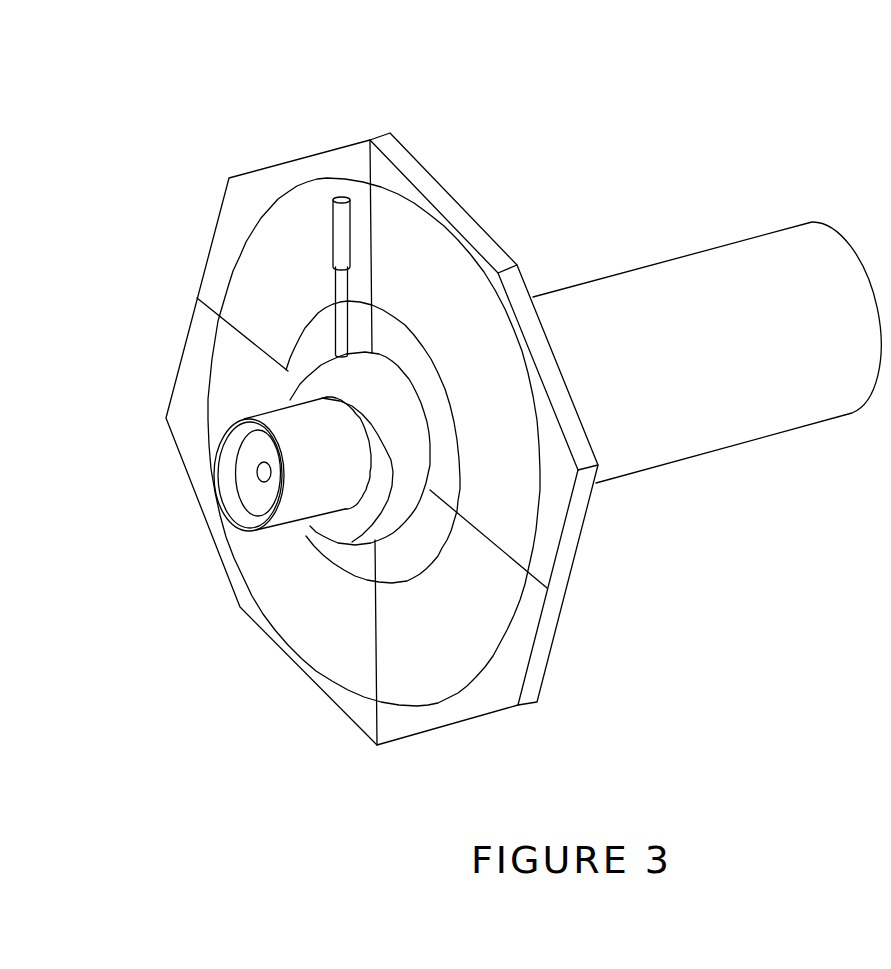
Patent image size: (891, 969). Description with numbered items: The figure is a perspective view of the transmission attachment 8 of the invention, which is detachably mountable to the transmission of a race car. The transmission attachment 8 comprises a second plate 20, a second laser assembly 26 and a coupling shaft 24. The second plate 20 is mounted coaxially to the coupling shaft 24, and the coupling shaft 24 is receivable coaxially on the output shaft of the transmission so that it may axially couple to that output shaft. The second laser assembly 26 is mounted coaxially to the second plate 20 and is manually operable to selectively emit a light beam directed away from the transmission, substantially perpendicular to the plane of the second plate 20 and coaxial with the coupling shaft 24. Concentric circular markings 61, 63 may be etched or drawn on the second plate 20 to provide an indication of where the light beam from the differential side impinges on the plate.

The transmission attachment 8 is at (293, 128).
The second plate 20 is at (443, 193).
The coupling shaft 24 is at (689, 290).
The second laser assembly 26 is at (307, 503).
The concentric circular marking 61 is at (510, 638).
The concentric circular marking 63 is at (357, 568).